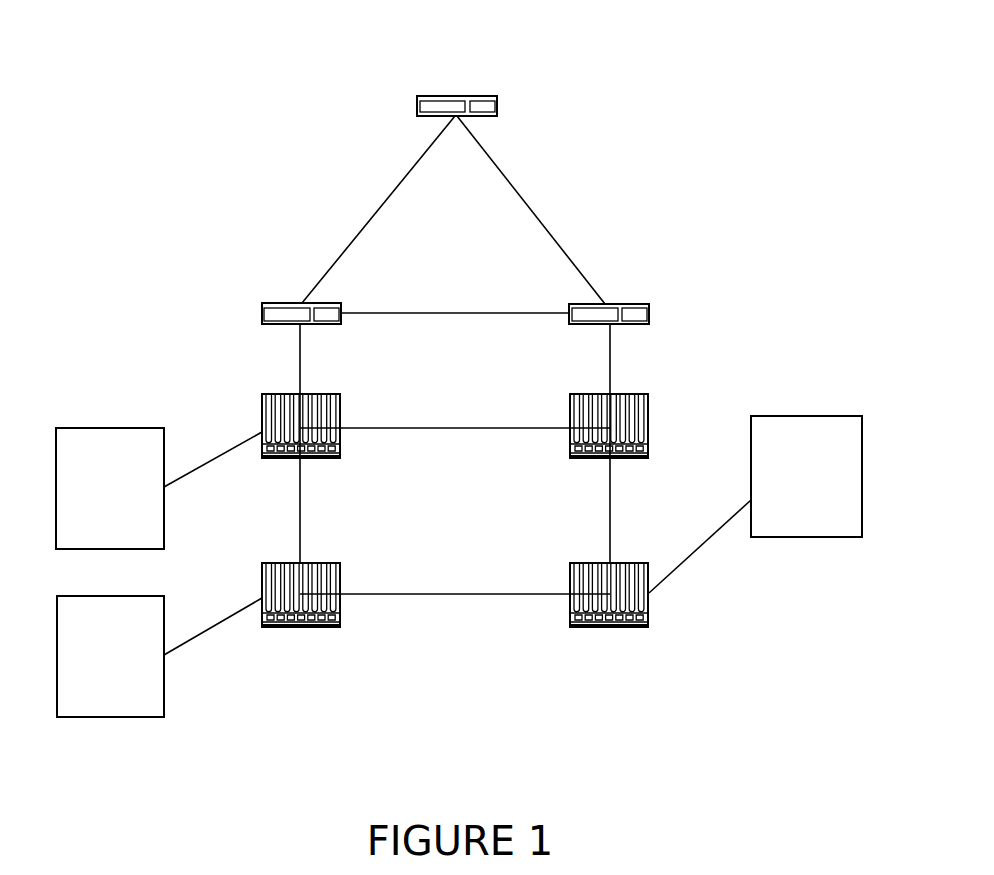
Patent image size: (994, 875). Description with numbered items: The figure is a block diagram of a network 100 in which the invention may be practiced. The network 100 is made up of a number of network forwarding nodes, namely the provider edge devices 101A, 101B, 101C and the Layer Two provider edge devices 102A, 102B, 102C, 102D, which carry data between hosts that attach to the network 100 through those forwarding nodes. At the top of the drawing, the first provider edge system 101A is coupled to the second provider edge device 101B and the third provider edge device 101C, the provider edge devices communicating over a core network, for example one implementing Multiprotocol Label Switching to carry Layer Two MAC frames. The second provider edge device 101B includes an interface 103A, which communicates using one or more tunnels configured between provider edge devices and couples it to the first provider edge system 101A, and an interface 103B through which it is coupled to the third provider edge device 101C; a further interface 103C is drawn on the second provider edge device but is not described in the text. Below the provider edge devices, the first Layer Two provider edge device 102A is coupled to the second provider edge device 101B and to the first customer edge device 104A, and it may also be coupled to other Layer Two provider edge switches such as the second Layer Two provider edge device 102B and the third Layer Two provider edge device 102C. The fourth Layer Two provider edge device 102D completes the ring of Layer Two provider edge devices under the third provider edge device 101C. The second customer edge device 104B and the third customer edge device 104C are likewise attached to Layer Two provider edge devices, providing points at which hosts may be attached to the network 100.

The network 100 is at (884, 605).
The provider edge system PE-1 101A is at (457, 80).
The provider edge device PE-2 101B is at (313, 309).
The provider edge device PE-3 101C is at (617, 341).
The Layer 2 provider edge device L2PE-1 102A is at (319, 452).
The Layer 2 provider edge device L2PE-2 102B is at (628, 452).
The Layer 2 provider edge device L2PE-3 102C is at (301, 622).
The Layer 2 provider edge device L2PE-4 102D is at (609, 622).
The interface 103A is at (303, 302).
The interface 103B is at (342, 312).
The port of PE-2 103C is at (296, 325).
The customer edge device CE-1 104A is at (110, 463).
The customer edge device CE-2 104B is at (110, 682).
The customer edge device CE-3 104C is at (806, 501).